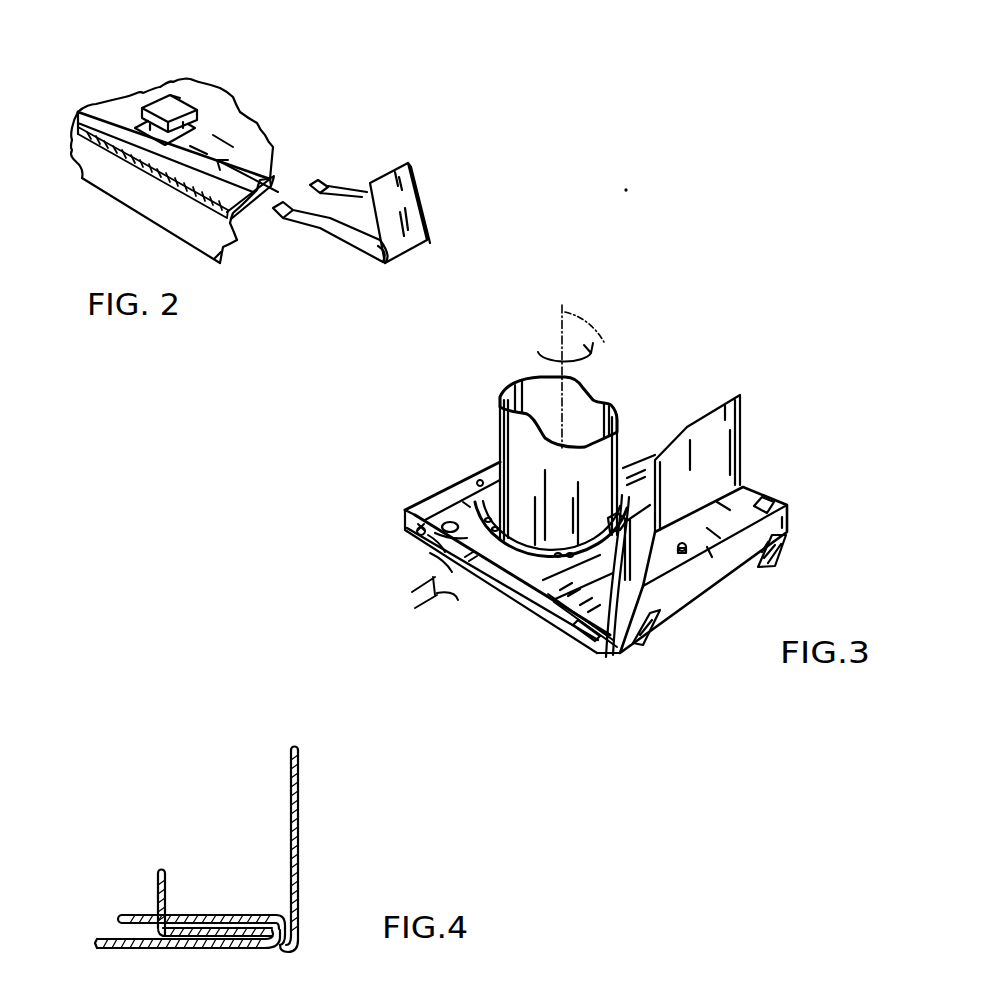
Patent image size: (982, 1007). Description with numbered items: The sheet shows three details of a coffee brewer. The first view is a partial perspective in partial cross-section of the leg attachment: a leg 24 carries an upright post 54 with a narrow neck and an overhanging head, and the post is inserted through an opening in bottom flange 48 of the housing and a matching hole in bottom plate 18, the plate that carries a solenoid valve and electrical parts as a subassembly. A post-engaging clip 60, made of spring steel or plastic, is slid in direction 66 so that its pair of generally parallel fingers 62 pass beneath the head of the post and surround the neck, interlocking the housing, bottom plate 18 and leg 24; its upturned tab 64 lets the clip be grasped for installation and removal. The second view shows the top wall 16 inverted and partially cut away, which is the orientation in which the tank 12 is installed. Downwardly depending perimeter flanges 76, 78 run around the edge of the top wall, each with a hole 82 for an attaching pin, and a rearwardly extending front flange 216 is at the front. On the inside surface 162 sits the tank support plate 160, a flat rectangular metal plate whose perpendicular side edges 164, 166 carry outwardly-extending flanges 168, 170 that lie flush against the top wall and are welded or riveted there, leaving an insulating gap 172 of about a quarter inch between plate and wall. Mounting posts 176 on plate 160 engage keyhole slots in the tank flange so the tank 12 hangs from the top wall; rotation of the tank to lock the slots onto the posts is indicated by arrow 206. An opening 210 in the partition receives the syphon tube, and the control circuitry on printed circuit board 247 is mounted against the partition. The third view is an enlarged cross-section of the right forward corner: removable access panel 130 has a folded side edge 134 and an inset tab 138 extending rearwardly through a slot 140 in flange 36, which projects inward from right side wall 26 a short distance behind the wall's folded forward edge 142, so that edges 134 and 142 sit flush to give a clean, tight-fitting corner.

In FIG. 3, the tank 12 is at (497, 423).
In FIG. 3, the top wall 16 is at (606, 665).
In FIG. 2, the bottom plate 18 is at (110, 122).
In FIG. 2, the leg 24 is at (100, 180).
In FIG. 2, the bottom flange 48 is at (75, 158).
In FIG. 2, the leg post 54 is at (172, 103).
In FIG. 2, the post-engaging clip 60 is at (353, 237).
In FIG. 2, the fingers 62 is at (292, 196).
In FIG. 2, the upturned tab 64 is at (410, 198).
In FIG. 2, the installation direction 66 is at (268, 212).
In FIG. 3, the perimeter flange 76 is at (443, 492).
In FIG. 3, the perimeter flange 78 is at (590, 640).
In FIG. 3, the hole 82 is at (480, 477).
In FIG. 3, the tank support plate 160 is at (497, 572).
In FIG. 3, the inside surface of top wall 162 is at (430, 553).
In FIG. 3, the perpendicular side edge 164 is at (535, 572).
In FIG. 3, the perpendicular side edge 166 is at (430, 536).
In FIG. 3, the outwardly-extending flange 168 is at (553, 612).
In FIG. 3, the outwardly-extending flange 170 is at (417, 526).
In FIG. 3, the gap 172 is at (440, 587).
In FIG. 3, the mounting post 176 is at (640, 475).
In FIG. 3, the rotation direction 206 is at (608, 337).
In FIG. 3, the opening in partition 210 is at (660, 516).
In FIG. 3, the rearwardly extending front flange 216 is at (775, 502).
In FIG. 3, the printed circuit board 247 is at (622, 655).
In FIG. 4, the right side wall 26 is at (300, 893).
In FIG. 4, the front edge flange 36 is at (262, 915).
In FIG. 4, the removable access panel 130 is at (193, 948).
In FIG. 4, the right side edge of panel 134 is at (273, 945).
In FIG. 4, the tab 138 is at (158, 887).
In FIG. 4, the slot 140 is at (168, 907).
In FIG. 4, the forward edge of side wall 142 is at (295, 947).